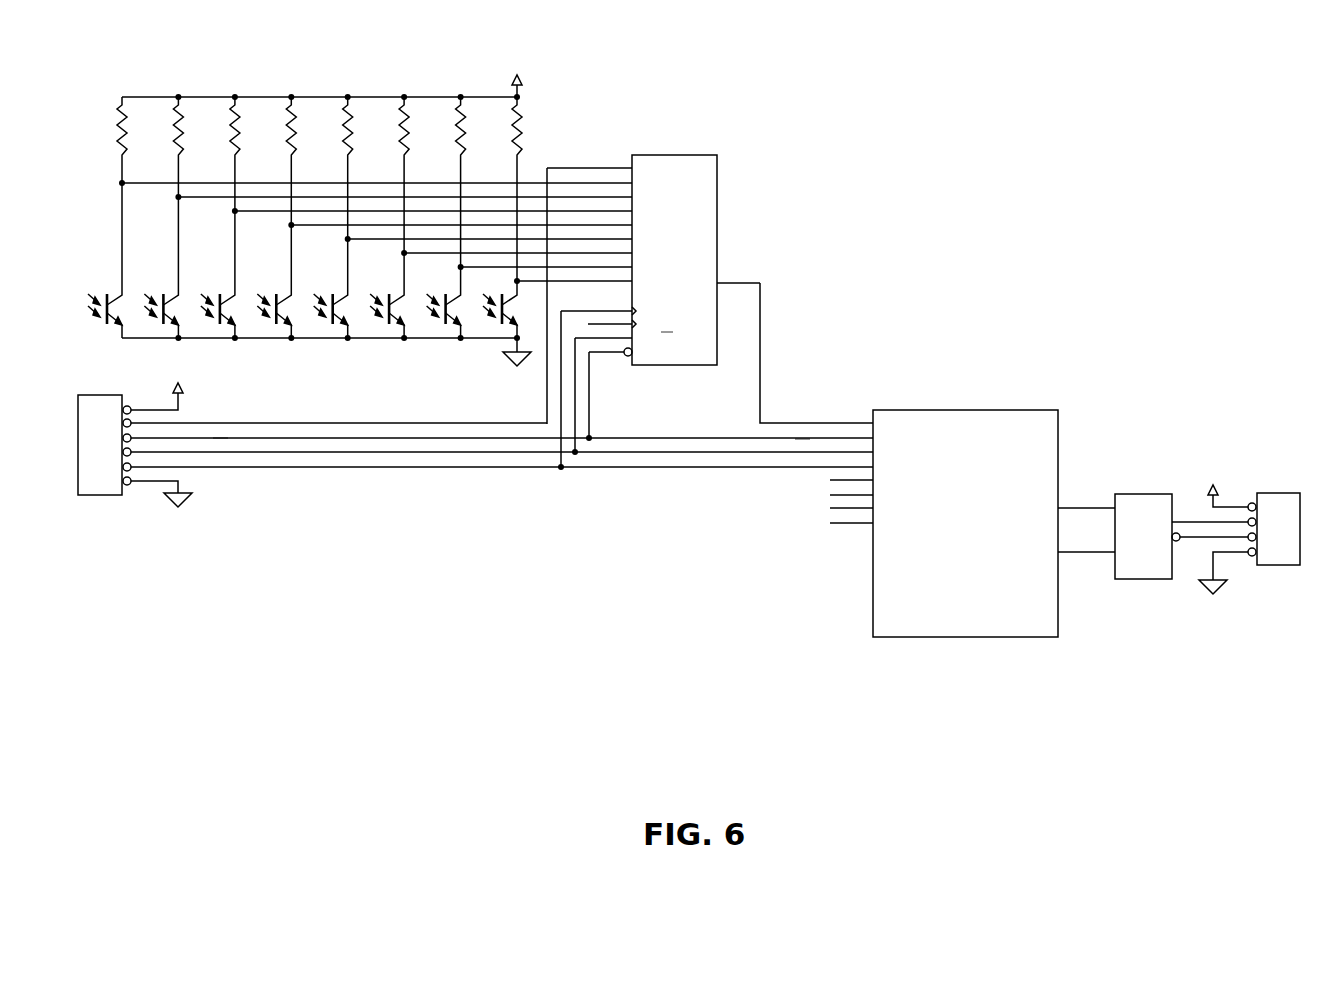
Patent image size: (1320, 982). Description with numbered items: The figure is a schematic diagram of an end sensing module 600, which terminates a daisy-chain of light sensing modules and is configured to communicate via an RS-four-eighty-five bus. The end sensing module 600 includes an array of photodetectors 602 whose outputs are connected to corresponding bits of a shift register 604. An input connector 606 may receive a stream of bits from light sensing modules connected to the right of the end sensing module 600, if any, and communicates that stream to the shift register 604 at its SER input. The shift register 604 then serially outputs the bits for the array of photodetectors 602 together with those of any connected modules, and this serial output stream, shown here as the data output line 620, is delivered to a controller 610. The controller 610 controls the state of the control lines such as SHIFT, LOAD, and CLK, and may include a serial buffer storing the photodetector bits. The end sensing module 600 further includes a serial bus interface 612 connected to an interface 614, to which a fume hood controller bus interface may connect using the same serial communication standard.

The end sensing module 600 is at (847, 172).
The array of photodetectors 602 is at (339, 352).
The shift register 604 is at (698, 214).
The input connector 606 is at (101, 505).
The controller 610 is at (983, 482).
The RS485 bus interface 612 is at (1128, 598).
The interface 614 is at (1289, 478).
The data out line 620 is at (761, 330).